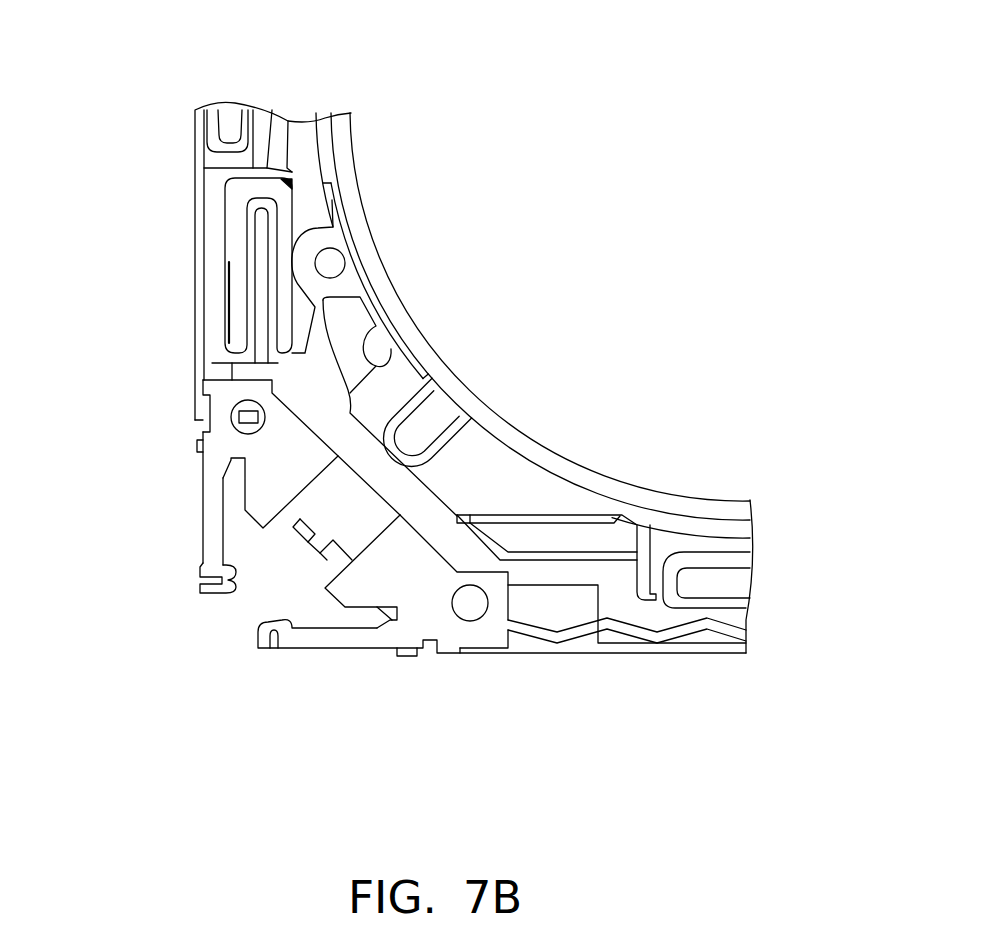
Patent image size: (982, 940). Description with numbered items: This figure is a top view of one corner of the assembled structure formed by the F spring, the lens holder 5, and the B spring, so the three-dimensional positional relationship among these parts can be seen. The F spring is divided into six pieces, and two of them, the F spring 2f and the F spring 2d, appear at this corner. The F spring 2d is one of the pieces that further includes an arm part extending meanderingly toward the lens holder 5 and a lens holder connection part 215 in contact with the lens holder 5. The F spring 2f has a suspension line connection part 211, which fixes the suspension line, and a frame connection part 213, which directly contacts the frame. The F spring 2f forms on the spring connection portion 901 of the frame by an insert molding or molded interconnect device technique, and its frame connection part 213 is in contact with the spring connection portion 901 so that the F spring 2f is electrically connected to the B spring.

The lens holder 5 is at (462, 395).
The lens holder connection part 215 is at (345, 263).
The frame connection part 213 is at (231, 413).
The spring connection portion 901 is at (320, 499).
The suspension line connection part 211 is at (202, 582).
The F spring 2f is at (300, 475).
The F spring 2d is at (414, 583).